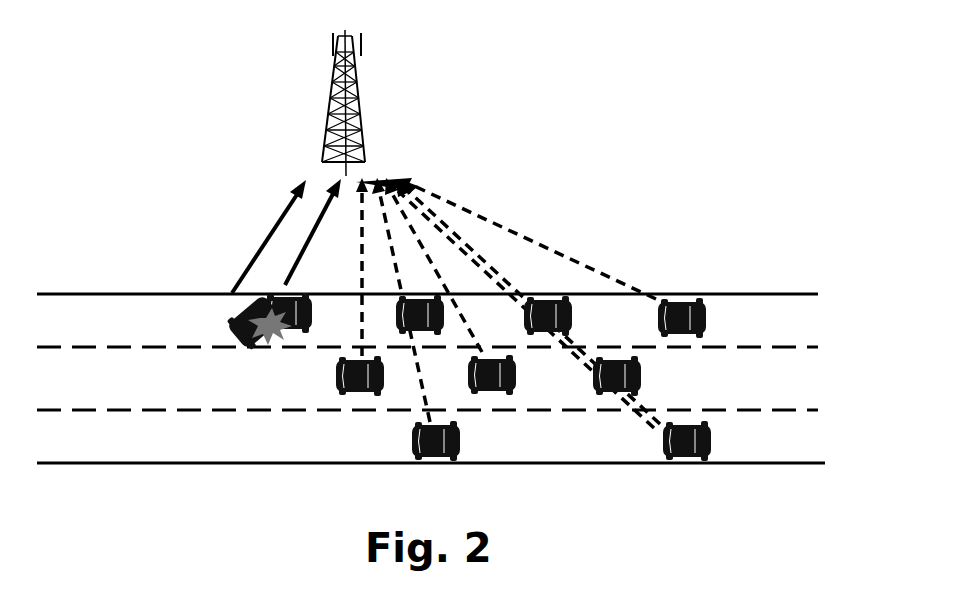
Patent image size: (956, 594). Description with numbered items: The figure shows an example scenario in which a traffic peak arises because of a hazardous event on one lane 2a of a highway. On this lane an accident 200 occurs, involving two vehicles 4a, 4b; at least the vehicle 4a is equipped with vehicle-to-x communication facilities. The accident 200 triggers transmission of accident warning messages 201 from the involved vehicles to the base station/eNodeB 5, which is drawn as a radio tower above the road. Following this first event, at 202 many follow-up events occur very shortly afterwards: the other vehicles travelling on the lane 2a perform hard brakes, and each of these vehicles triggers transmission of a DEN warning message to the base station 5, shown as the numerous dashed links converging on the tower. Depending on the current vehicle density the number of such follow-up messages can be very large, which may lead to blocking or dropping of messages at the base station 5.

The base station/eNodeB 5 is at (362, 100).
The lane 2a is at (763, 286).
The vehicle 4a is at (236, 303).
The vehicle 4b is at (318, 300).
The accident 200 is at (230, 407).
The accident warning messages 201 is at (306, 245).
The follow-up events 202 is at (438, 283).